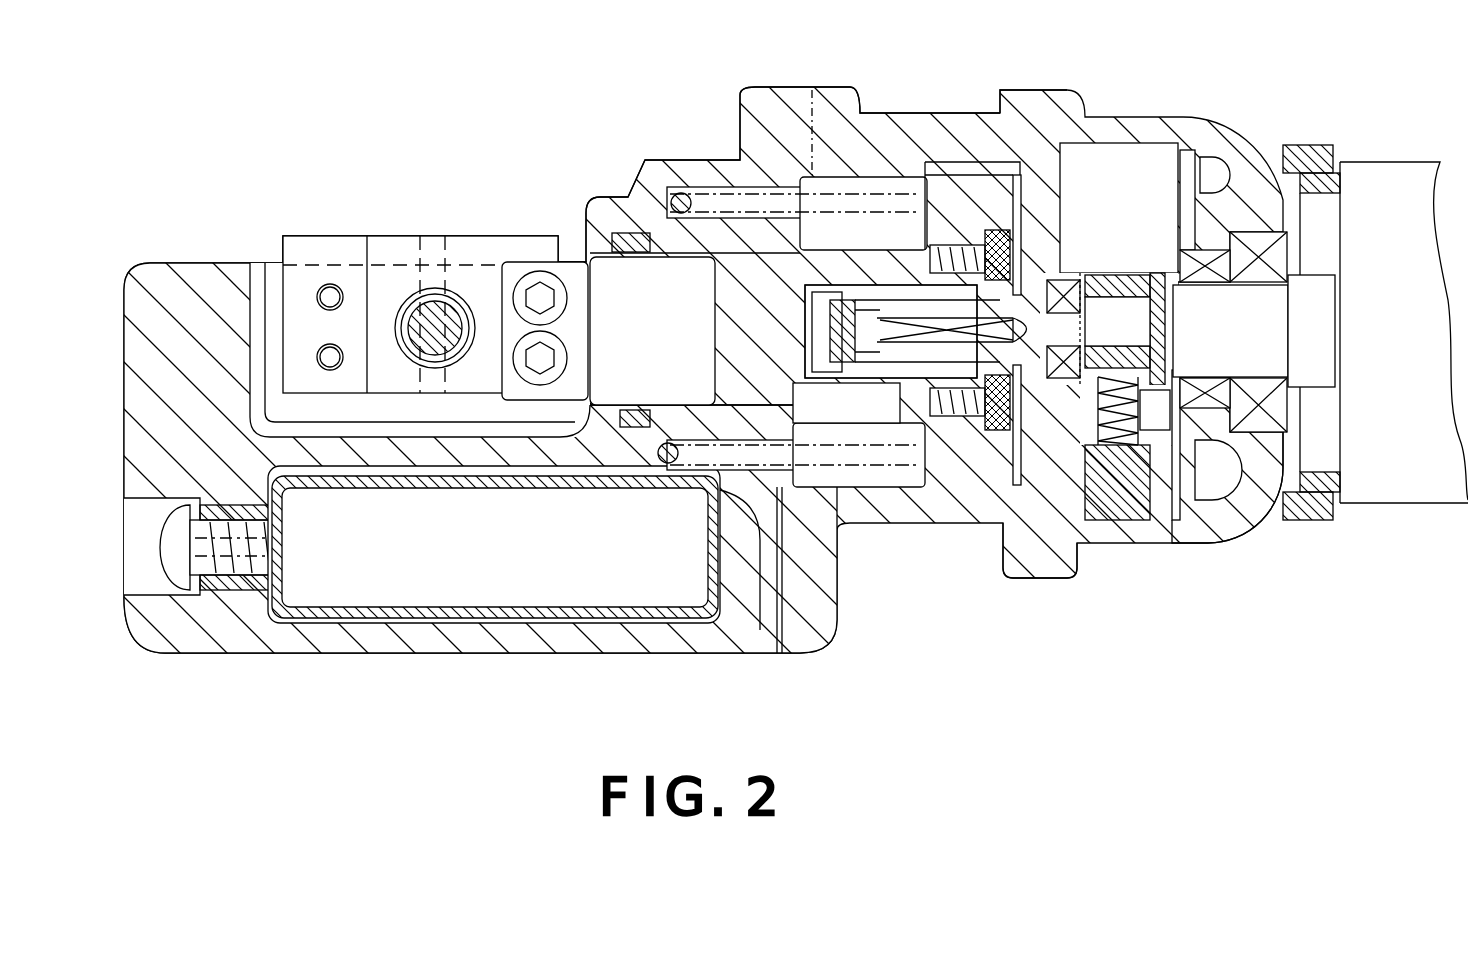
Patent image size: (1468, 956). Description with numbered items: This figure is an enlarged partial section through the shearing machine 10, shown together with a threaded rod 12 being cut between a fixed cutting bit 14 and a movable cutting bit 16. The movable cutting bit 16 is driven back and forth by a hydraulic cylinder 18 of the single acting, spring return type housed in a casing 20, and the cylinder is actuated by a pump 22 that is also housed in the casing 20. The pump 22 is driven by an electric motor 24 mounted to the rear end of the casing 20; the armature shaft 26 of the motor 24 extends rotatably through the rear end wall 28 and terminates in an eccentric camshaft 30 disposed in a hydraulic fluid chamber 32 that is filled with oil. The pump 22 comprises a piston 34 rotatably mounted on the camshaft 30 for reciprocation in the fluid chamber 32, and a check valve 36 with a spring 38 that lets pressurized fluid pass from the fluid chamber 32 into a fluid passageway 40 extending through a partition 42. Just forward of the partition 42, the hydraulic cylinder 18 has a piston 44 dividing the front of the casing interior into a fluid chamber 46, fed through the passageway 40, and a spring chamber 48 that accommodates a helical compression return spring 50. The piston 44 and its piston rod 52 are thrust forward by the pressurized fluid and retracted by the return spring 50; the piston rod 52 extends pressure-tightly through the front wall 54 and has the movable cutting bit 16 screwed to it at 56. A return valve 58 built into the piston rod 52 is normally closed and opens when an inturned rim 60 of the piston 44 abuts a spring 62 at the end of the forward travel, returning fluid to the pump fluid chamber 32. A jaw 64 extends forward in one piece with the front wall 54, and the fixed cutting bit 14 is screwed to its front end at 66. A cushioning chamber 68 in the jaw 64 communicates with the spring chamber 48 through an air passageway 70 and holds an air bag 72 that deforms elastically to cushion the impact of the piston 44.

The shearing machine 10 is at (215, 170).
The threaded rod 12 is at (425, 305).
The fixed cutting bit 14 is at (395, 250).
The movable cutting bit 16 is at (487, 255).
The hydraulic cylinder 18 is at (893, 155).
The casing 20 is at (1240, 135).
The pump 22 is at (1135, 440).
The electric motor 24 is at (1420, 490).
The armature shaft 26 is at (1270, 342).
The rear end wall 28 is at (1240, 510).
The eccentric camshaft 30 is at (1125, 318).
The hydraulic fluid chamber 32 is at (1135, 155).
The piston 34 is at (1095, 300).
The check valve 36 is at (1120, 450).
The spring 38 is at (1085, 440).
The fluid passageway 40 is at (1025, 470).
The partition 42 is at (1035, 175).
The piston 44 is at (940, 235).
The fluid chamber 46 is at (1025, 180).
The spring chamber 48 is at (855, 185).
The return spring 50 is at (815, 195).
The piston rod 52 is at (675, 270).
The front wall 54 is at (600, 200).
The screw connection 56 is at (545, 360).
The return valve 58 is at (800, 322).
The inturned rim 60 is at (990, 230).
The spring 62 is at (868, 370).
The jaw 64 is at (250, 650).
The screw connection 66 is at (330, 297).
The cushioning chamber 68 is at (730, 612).
The air passageway 70 is at (780, 560).
The air bag 72 is at (470, 612).